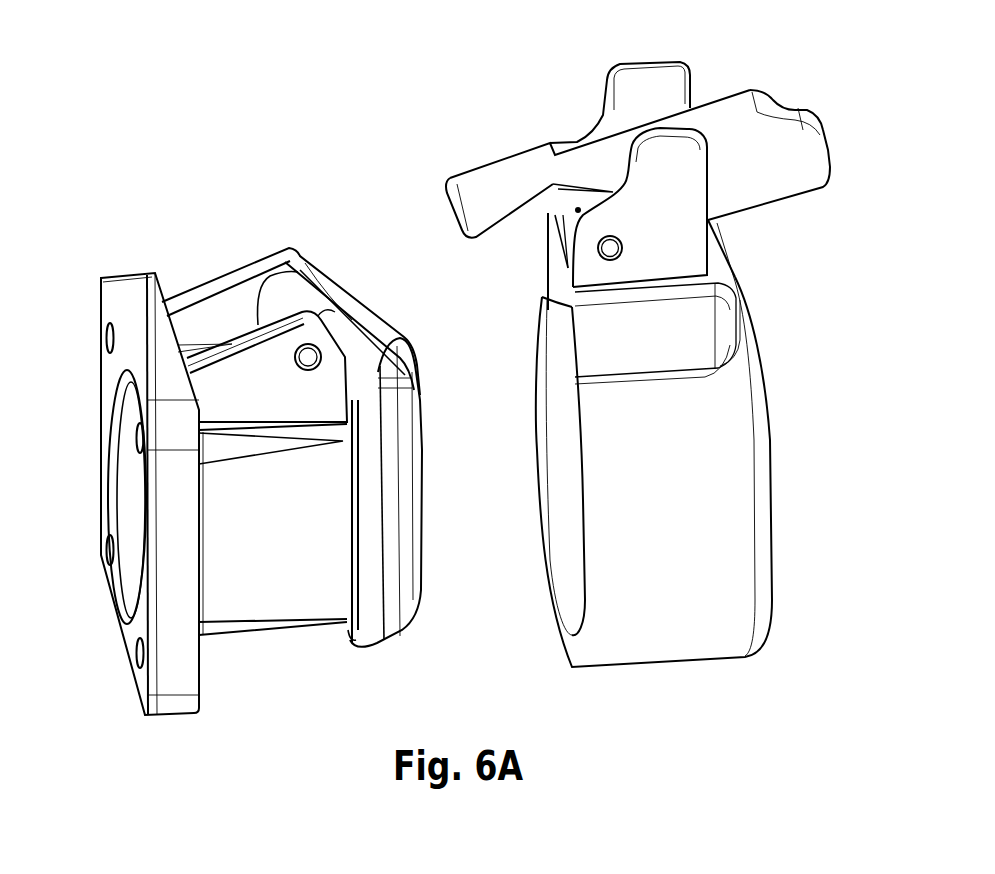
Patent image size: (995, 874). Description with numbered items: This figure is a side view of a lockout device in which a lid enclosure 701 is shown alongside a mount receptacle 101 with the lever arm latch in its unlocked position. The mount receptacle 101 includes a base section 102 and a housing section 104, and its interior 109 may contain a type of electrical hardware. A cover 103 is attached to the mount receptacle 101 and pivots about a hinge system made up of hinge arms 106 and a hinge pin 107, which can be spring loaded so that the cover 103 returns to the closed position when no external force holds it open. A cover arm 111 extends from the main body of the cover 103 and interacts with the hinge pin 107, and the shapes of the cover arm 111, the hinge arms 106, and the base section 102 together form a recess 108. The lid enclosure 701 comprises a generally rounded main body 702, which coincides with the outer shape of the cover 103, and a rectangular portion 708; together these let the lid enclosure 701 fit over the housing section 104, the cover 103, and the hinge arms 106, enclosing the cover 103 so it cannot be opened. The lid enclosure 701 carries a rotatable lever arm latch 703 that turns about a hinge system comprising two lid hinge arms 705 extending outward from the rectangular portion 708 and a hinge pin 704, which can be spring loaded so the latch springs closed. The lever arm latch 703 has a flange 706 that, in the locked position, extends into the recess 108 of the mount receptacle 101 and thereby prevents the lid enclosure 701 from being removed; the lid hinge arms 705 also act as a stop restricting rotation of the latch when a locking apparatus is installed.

The mount receptacle 101 is at (80, 360).
The base section 102 is at (137, 297).
The cover 103 is at (415, 483).
The housing section 104 is at (257, 567).
The hinge arms 106 is at (318, 316).
The hinge pin 107 is at (322, 348).
The recess 108 is at (232, 323).
The interior 109 is at (118, 474).
The cover arm 111 is at (314, 314).
The lid enclosure 701 is at (802, 364).
The main body 702 is at (708, 475).
The lever arm latch 703 is at (793, 156).
The hinge pin 704 is at (600, 243).
The lid hinge arms 705 is at (680, 137).
The flange 706 is at (498, 173).
The rectangular portion 708 is at (732, 264).